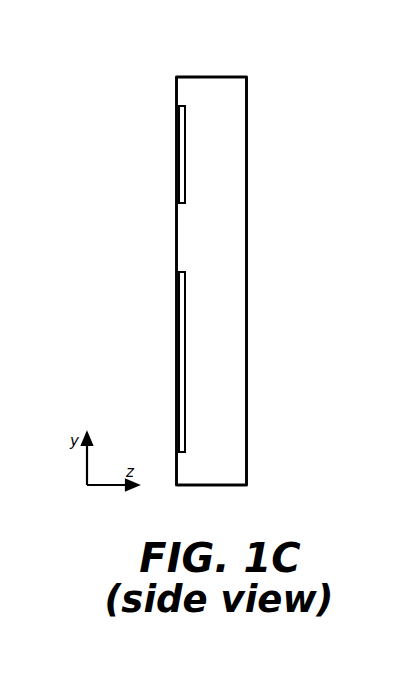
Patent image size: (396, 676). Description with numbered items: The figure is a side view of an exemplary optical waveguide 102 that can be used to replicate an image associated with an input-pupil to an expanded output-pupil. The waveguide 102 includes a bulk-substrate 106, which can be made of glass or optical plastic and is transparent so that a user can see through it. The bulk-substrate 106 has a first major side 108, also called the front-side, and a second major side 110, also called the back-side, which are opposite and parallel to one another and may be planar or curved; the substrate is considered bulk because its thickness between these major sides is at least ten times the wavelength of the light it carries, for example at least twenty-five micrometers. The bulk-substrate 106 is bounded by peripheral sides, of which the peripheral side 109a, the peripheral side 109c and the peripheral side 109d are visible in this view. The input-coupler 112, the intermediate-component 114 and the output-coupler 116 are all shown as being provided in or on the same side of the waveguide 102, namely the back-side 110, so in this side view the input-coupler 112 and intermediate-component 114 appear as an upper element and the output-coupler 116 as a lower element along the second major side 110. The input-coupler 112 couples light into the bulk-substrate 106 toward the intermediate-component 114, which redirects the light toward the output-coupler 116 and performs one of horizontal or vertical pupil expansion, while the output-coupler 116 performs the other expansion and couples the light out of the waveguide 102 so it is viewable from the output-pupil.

The optical waveguide 102 is at (297, 137).
The bulk-substrate 106 is at (195, 250).
The first major side 108 is at (248, 97).
The peripheral side 109a is at (5, 212).
The peripheral side 109c is at (213, 77).
The peripheral side 109d is at (218, 485).
The second major side 110 is at (175, 85).
The input-coupler 112 is at (176, 157).
The intermediate-component 114 is at (182, 154).
The output-coupler 116 is at (176, 358).